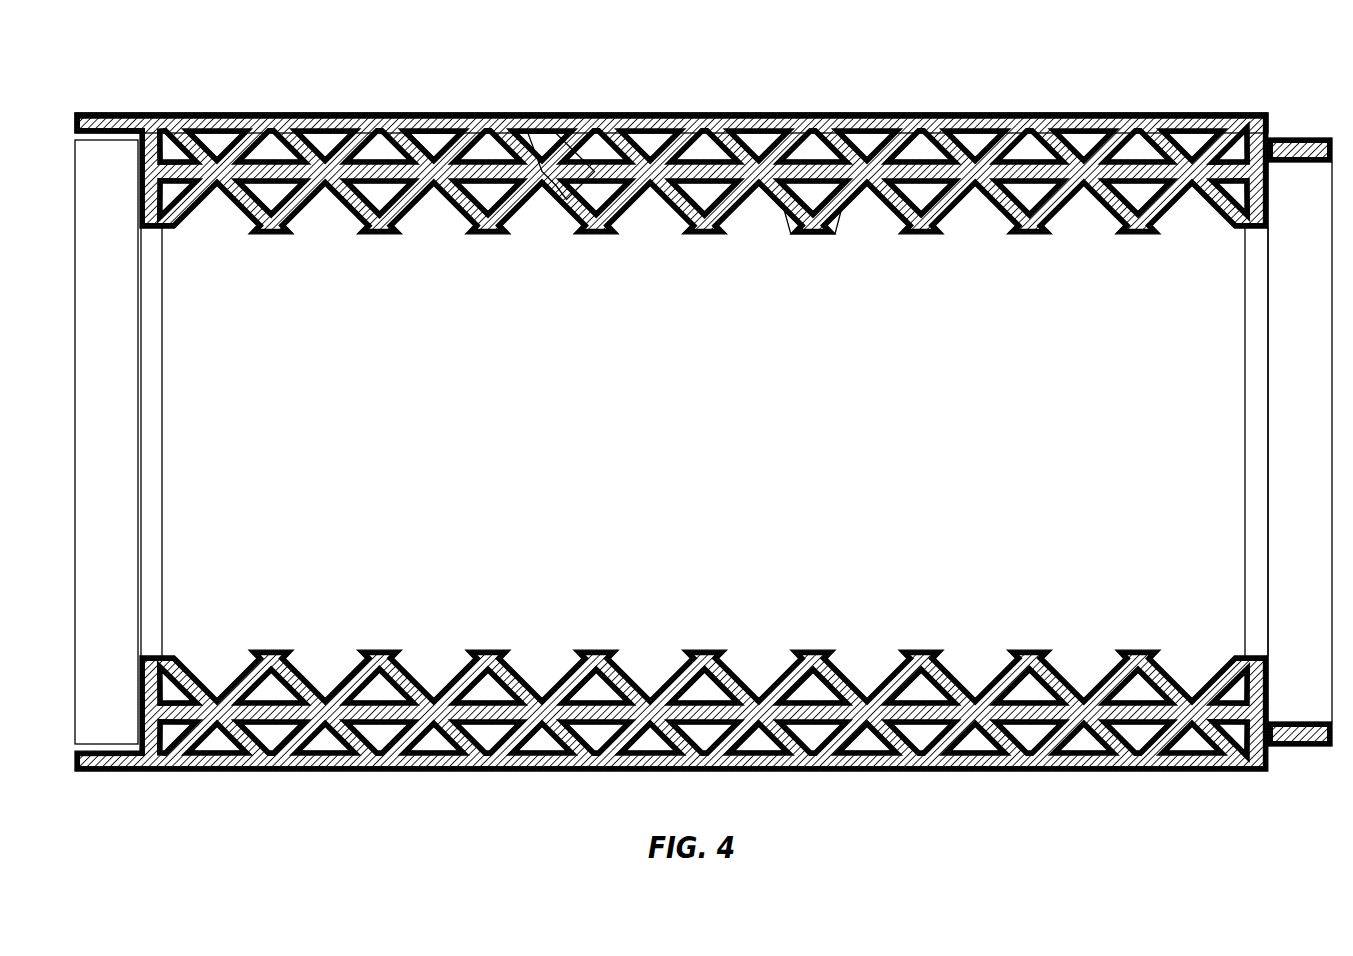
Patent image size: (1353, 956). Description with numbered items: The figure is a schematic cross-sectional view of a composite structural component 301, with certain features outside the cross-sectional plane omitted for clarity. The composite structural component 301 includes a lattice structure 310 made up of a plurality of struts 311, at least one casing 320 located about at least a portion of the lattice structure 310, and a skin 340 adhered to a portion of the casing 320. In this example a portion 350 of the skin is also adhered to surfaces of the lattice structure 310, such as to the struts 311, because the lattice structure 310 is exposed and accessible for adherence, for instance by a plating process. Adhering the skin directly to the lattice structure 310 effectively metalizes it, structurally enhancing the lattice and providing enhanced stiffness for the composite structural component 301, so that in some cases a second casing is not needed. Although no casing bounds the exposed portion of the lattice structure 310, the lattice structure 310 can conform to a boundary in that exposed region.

The composite structural component 301 is at (566, 47).
The lattice structure 310 is at (429, 148).
The struts 311 is at (558, 146).
The casing 320 is at (648, 117).
The skin 340 is at (758, 115).
The portion of the skin 350 is at (832, 203).